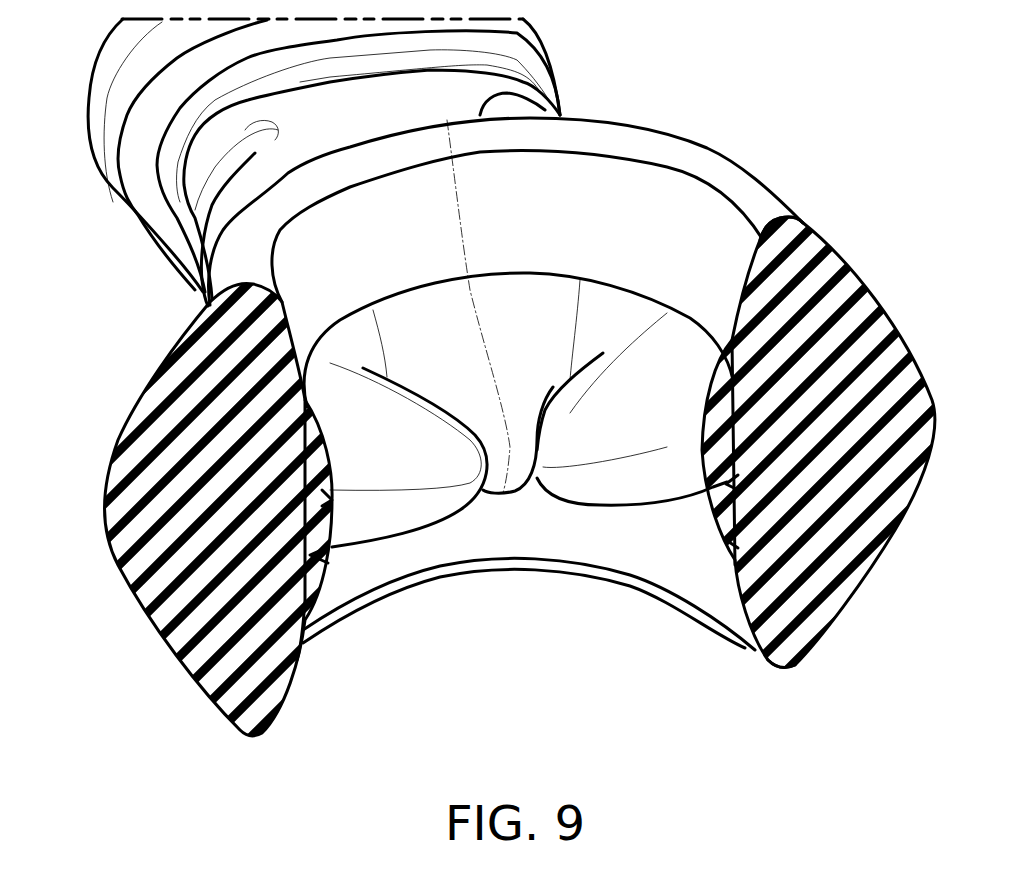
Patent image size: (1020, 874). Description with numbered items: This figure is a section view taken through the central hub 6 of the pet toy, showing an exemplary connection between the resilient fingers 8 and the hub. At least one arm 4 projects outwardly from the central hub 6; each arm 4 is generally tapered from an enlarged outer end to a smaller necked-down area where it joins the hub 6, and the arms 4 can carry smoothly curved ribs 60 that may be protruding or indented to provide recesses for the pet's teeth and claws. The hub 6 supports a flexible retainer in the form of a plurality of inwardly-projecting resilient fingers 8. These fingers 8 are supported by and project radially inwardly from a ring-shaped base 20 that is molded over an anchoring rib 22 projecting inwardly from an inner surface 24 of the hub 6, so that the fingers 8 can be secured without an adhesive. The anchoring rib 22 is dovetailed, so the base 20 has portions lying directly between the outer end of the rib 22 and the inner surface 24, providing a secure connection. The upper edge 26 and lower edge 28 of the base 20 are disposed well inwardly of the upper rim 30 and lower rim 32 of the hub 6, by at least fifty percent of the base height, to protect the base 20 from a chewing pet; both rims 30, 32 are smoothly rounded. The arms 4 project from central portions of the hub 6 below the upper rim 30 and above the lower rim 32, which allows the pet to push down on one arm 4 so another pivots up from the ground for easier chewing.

The arm 4 is at (95, 113).
The central hub 6 is at (860, 312).
The resilient fingers 8 is at (532, 310).
The ring-shaped base 20 is at (328, 565).
The anchoring rib 22 is at (332, 497).
The inner surface 24 is at (710, 233).
The upper edge 26 is at (613, 285).
The lower edge 28 is at (732, 560).
The upper rim 30 is at (787, 222).
The lower rim 32 is at (790, 668).
The ribs 60 is at (162, 215).